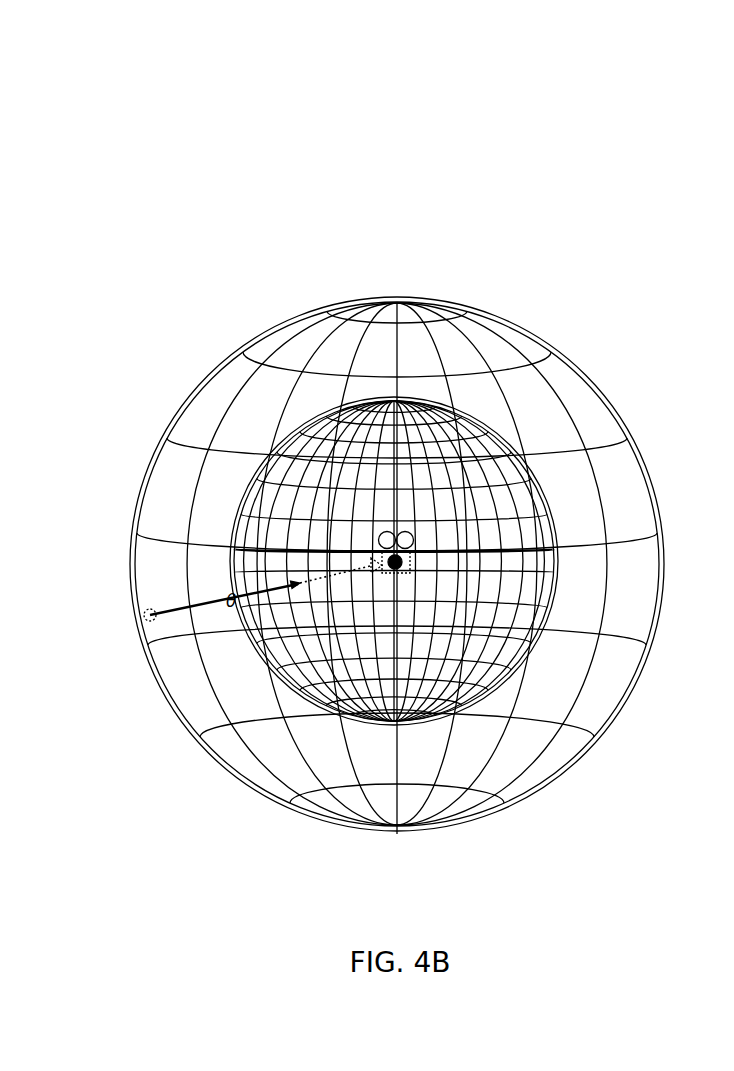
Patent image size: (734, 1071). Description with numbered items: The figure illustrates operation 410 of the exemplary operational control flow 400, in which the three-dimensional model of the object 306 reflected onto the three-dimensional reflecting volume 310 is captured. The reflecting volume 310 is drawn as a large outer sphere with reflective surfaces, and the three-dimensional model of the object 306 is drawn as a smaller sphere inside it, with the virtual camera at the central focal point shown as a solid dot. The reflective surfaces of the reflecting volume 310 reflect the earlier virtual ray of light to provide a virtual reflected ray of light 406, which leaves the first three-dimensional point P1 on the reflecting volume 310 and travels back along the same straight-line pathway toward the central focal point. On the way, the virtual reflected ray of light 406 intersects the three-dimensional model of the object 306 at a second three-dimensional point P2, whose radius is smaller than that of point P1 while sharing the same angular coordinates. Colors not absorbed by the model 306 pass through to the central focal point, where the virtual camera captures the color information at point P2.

The operational control flow 400 is at (694, 128).
The operation 410 is at (651, 265).
The three-dimensional reflecting volume 310 is at (473, 308).
The three-dimensional model of the object 306 is at (511, 450).
The virtual reflected ray of light 406 is at (184, 622).
The first three-dimensional point P1 is at (124, 615).
The second three-dimensional point P2 is at (206, 592).